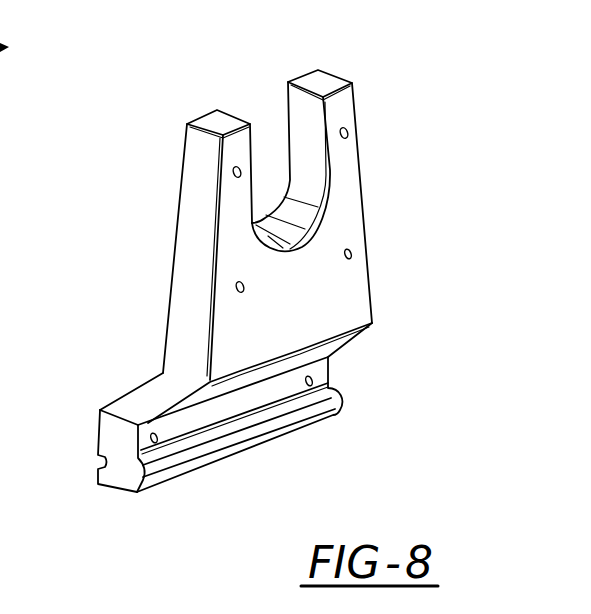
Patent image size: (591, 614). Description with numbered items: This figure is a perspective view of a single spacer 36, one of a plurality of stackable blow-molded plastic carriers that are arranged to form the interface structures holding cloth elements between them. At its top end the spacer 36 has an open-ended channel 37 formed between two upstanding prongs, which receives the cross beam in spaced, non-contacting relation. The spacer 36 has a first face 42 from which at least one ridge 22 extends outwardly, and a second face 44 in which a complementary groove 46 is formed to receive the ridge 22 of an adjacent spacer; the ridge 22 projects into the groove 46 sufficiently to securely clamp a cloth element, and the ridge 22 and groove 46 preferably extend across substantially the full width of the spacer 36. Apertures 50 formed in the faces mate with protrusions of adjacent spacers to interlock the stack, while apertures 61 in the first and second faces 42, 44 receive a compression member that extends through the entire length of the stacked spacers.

The ridge 22 is at (262, 420).
The spacer 36 is at (165, 143).
The open-ended channel 37 is at (268, 114).
The first face 42 is at (363, 289).
The second face 44 is at (167, 335).
The groove 46 is at (84, 463).
The aperture 50 is at (348, 135).
The aperture 61 is at (236, 287).